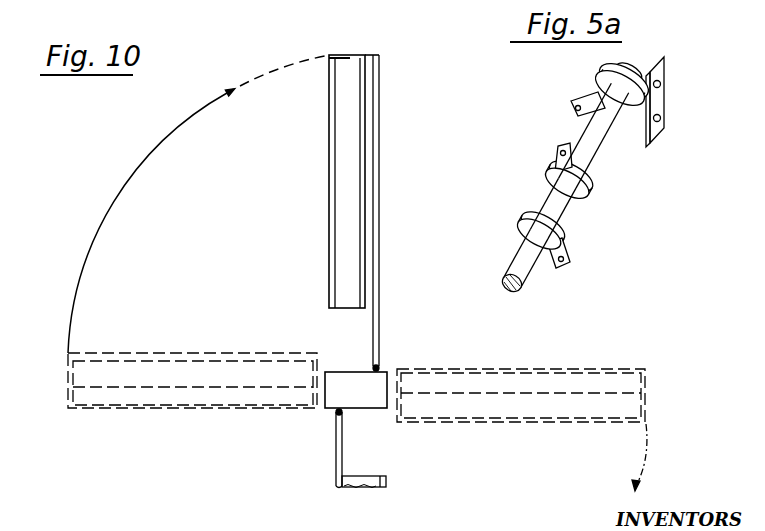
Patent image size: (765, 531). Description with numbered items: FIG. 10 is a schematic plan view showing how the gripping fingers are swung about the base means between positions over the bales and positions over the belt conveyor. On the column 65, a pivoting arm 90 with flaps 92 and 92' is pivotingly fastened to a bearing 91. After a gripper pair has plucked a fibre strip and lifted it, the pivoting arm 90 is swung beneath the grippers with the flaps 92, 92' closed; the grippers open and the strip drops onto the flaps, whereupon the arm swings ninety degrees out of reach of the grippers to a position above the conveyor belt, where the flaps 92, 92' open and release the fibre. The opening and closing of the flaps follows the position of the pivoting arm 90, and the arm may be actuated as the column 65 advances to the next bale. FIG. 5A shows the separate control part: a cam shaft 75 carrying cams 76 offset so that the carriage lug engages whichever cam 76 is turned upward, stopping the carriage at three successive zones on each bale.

In FIG. 10, the column 65 is at (356, 390).
In FIG. 10, the pivoting arm 90 is at (376, 150).
In FIG. 10, the bearing 91 is at (380, 366).
In FIG. 10, the flap 92 is at (356, 273).
In FIG. 10, the flap 92' is at (357, 272).
In FIG. 5A, the cam shaft 75 is at (517, 266).
In FIG. 5A, the cam 76 is at (576, 106).